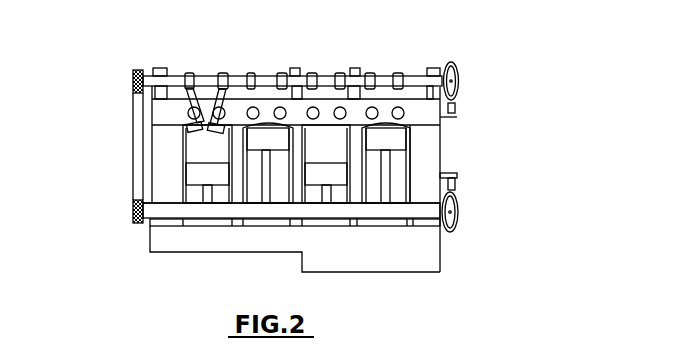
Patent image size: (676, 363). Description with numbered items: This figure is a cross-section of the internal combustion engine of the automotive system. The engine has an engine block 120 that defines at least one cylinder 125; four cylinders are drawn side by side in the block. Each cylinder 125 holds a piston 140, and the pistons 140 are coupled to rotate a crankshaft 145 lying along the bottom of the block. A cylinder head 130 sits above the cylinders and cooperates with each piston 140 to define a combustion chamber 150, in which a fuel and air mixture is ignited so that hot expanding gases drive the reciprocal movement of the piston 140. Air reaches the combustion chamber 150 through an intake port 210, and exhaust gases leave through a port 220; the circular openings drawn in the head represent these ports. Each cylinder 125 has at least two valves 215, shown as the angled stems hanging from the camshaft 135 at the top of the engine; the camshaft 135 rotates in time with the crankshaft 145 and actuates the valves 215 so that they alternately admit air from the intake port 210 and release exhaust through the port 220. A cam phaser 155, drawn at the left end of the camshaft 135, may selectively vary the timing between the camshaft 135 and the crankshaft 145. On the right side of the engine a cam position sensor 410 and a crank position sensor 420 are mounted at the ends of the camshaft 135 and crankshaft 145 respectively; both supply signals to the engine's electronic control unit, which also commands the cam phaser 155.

The engine block 120 is at (153, 163).
The cylinder 125 is at (301, 155).
The cylinder head 130 is at (152, 121).
The camshaft 135 is at (202, 75).
The piston 140 is at (328, 172).
The crankshaft 145 is at (177, 213).
The combustion chamber 150 is at (388, 126).
The cam phaser 155 is at (133, 80).
The intake port 210 is at (316, 108).
The valves 215 is at (186, 125).
The exhaust port 220 is at (275, 105).
The cam position sensor 410 is at (457, 118).
The crank position sensor 420 is at (457, 178).